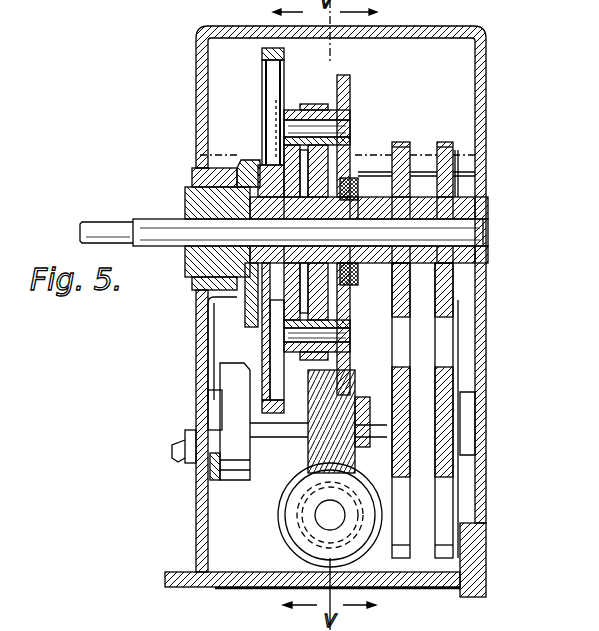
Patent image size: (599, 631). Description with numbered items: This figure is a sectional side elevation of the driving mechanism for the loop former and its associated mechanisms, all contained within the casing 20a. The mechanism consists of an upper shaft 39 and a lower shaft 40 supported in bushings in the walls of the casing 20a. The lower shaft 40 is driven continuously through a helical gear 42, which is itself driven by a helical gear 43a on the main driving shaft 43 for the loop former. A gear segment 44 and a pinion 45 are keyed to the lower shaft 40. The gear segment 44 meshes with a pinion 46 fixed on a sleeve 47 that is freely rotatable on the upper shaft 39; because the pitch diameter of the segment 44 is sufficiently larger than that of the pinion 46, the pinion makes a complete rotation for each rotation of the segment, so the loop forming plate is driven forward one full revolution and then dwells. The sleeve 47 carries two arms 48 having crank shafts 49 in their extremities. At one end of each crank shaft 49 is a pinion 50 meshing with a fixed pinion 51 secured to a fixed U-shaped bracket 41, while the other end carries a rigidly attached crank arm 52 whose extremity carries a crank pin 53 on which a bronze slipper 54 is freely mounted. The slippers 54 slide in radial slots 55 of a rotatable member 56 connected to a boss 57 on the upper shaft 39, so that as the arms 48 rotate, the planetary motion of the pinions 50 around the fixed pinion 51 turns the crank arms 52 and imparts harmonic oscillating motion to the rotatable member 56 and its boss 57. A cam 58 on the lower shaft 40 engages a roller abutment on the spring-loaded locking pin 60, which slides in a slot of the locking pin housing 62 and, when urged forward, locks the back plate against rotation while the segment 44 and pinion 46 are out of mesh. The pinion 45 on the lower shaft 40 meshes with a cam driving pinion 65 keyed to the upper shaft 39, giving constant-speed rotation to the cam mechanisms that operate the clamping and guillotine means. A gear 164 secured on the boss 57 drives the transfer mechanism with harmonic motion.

The casing 20a is at (196, 521).
The shaft 39 is at (155, 220).
The lower shaft 40 is at (380, 433).
The fixed U-shaped bracket 41 is at (355, 180).
The helical gear 42 is at (283, 498).
The main driving shaft 43 is at (323, 520).
The helical gear 43a is at (353, 545).
The gear segment 44 is at (405, 463).
The pinion 45 is at (443, 491).
The pinion 46 is at (402, 144).
The sleeve 47 is at (380, 198).
The arms 48 is at (350, 124).
The crank shafts 49 is at (316, 124).
The pinion 50 is at (351, 88).
The fixed pinion 51 is at (351, 292).
The crank arm 52 is at (287, 112).
The crank pins 53 is at (242, 160).
The bronze slippers 54 is at (278, 162).
The radial slots 55 is at (267, 86).
The rotatable member 56 is at (262, 72).
The boss 57 is at (190, 190).
The cam 58 is at (268, 457).
The spring-loaded locking pin 60 is at (172, 445).
The locking pin housing 62 is at (276, 462).
The cam driving pinion 65 is at (450, 155).
The gear 164 is at (235, 313).